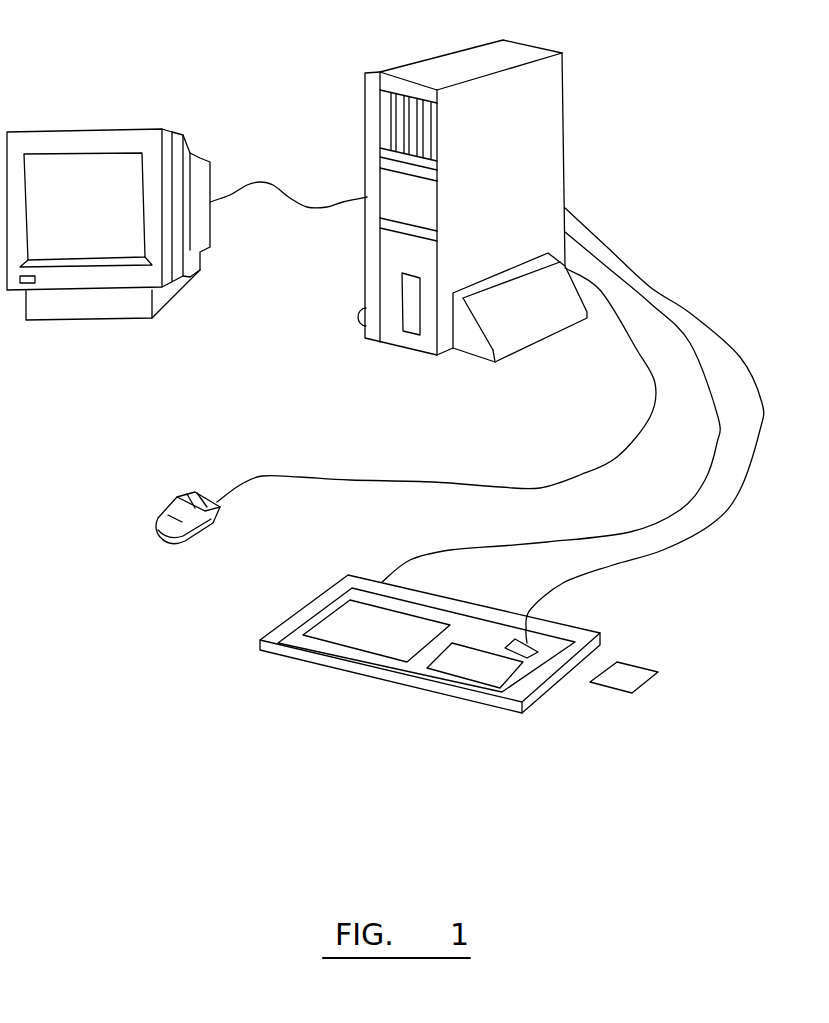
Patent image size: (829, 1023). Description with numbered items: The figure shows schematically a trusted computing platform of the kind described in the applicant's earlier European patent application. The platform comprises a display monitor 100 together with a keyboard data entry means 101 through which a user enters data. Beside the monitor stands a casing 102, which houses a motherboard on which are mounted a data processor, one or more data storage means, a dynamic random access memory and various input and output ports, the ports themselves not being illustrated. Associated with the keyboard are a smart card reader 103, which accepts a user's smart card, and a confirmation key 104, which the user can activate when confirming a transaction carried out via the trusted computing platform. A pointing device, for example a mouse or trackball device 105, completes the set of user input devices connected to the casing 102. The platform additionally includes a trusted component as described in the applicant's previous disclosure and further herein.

The display monitor 100 is at (80, 128).
The keyboard data entry means 101 is at (467, 668).
The casing 102 is at (520, 132).
The smart card reader 103 is at (603, 642).
The confirmation key 104 is at (527, 643).
The mouse or trackball device 105 is at (165, 510).